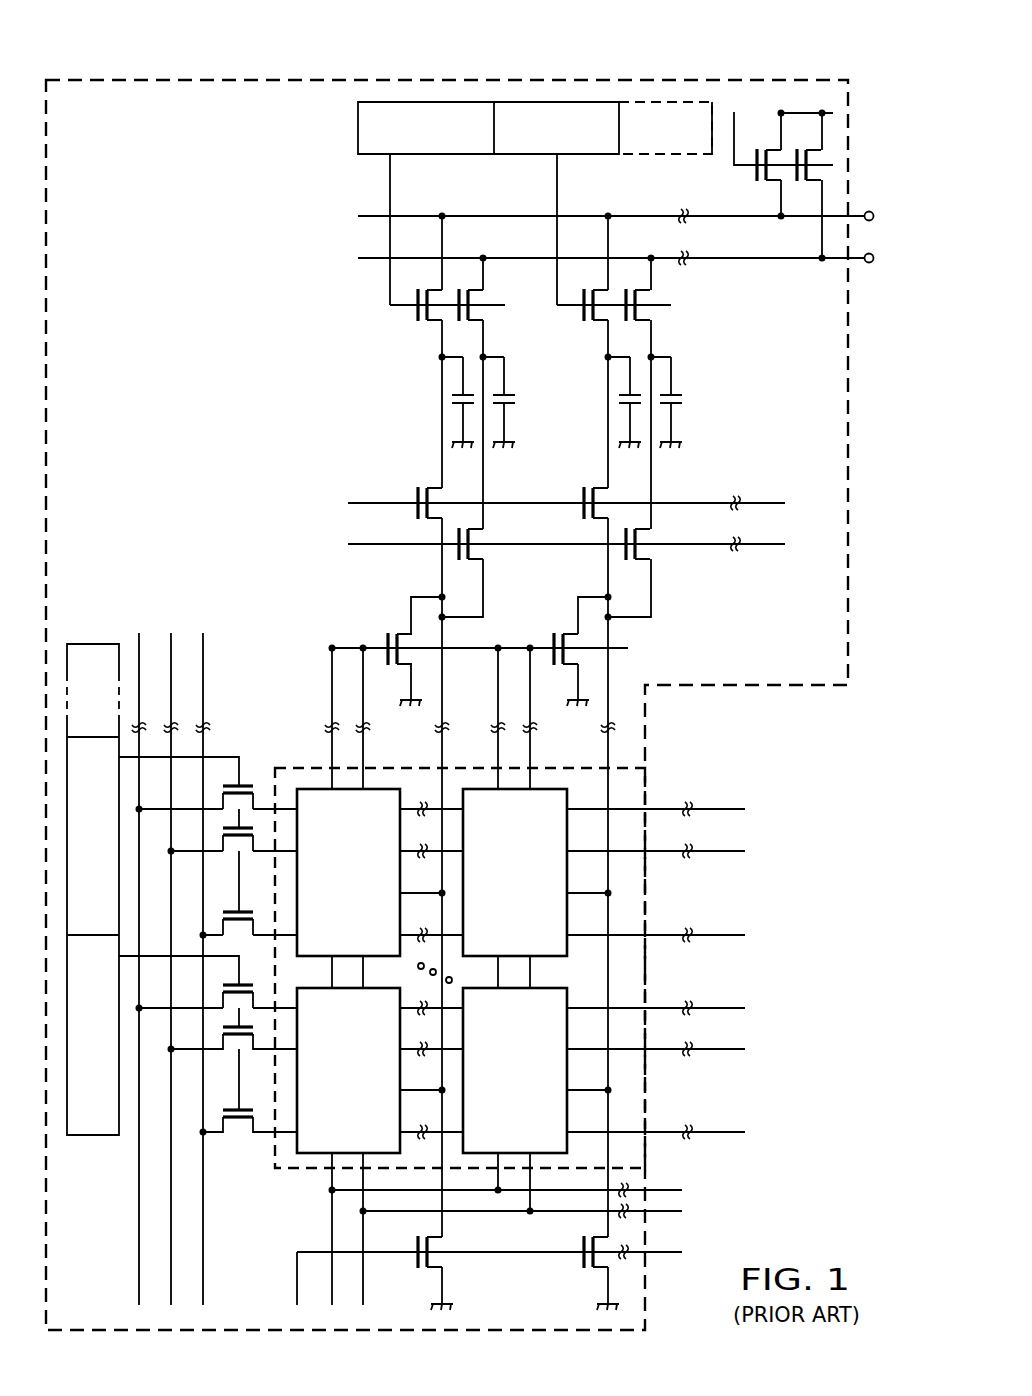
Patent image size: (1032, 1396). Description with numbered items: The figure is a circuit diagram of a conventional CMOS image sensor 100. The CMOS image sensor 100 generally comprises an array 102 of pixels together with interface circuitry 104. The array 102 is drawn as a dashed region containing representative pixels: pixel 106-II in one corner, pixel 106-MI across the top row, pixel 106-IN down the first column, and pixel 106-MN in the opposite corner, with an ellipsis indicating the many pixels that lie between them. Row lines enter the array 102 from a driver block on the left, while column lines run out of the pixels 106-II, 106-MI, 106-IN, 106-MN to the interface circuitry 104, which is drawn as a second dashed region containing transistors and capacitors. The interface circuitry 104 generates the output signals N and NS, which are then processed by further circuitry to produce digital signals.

The CMOS image sensor 100 is at (834, 62).
The array 102 is at (314, 766).
The interface circuitry 104 is at (797, 686).
The pixel 106-II is at (380, 903).
The pixel 106-MI is at (552, 903).
The pixel 106-IN is at (385, 1101).
The pixel 106-MN is at (557, 1101).